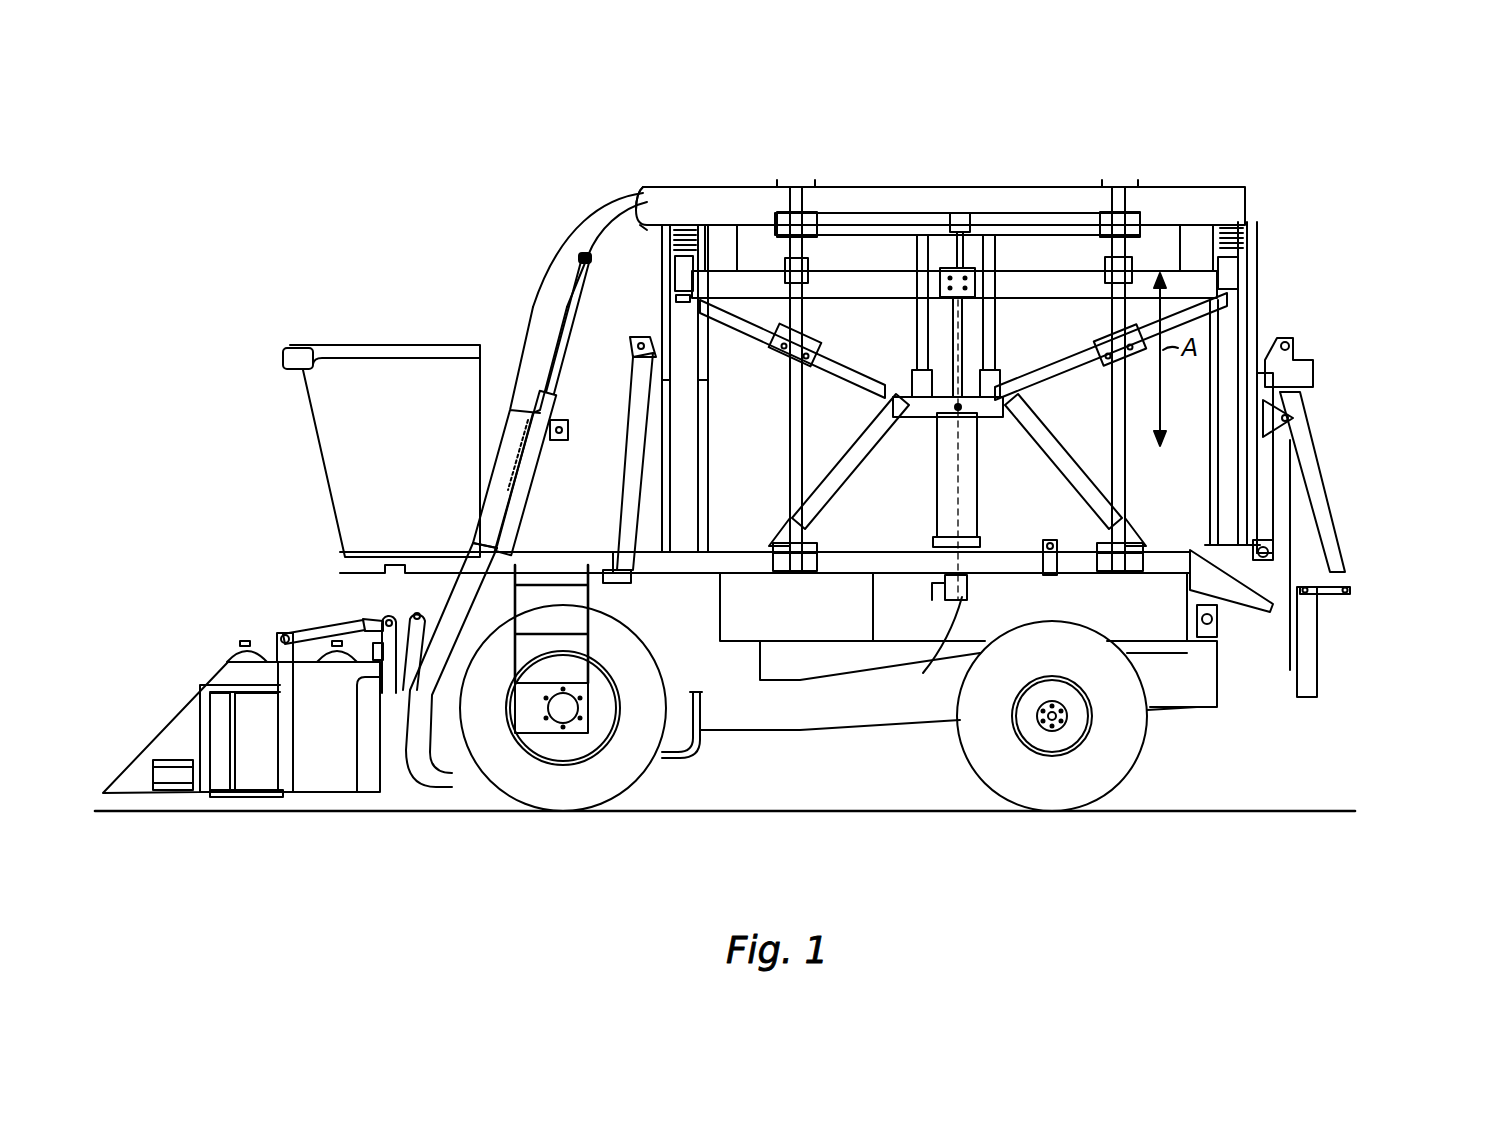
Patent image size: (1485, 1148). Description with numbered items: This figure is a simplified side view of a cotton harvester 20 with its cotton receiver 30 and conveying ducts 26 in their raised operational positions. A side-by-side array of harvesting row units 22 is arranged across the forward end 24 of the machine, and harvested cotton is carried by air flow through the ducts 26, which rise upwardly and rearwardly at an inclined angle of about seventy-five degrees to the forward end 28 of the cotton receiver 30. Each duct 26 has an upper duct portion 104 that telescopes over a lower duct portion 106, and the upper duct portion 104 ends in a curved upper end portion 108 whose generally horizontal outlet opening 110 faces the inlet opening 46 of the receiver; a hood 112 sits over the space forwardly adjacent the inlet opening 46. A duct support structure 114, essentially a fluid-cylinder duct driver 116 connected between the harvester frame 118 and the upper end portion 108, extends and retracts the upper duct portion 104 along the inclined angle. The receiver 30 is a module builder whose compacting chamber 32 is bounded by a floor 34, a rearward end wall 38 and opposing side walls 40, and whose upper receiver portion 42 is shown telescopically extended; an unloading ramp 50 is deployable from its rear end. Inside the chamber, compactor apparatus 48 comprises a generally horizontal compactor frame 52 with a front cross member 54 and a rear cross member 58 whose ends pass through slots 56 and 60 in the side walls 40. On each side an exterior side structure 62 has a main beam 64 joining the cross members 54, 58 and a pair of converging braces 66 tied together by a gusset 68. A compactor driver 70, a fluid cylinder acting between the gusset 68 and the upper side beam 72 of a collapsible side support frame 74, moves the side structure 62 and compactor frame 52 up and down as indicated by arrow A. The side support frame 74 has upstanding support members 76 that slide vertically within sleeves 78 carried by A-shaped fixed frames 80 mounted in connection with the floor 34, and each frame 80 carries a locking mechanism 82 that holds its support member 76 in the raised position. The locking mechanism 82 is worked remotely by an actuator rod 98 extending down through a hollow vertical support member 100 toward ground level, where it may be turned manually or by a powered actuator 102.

The cotton harvester 20 is at (1352, 108).
The harvesting row units 22 is at (262, 652).
The forward end 24 is at (449, 802).
The ducts 26 is at (538, 310).
The forward end 28 is at (657, 280).
The cotton receiver 30 is at (1258, 250).
The compacting chamber 32 is at (1185, 437).
The floor 34 is at (1205, 525).
The rearward end wall 38 is at (1265, 300).
The side walls 40 is at (1190, 380).
The upper receiver portion 42 is at (1125, 180).
The inlet opening 46 is at (620, 215).
The compactor apparatus 48 is at (850, 290).
The unloading ramp 50 is at (1318, 675).
The compactor frame 52 is at (600, 228).
The front cross member 54 is at (705, 230).
The slots 56 is at (662, 312).
The rear cross member 58 is at (1237, 230).
The slots 60 is at (1205, 300).
The exterior side structure 62 is at (957, 155).
The main beam 64 is at (740, 270).
The braces 66 is at (836, 345).
The gusset 68 is at (907, 415).
The compactor drivers 70 is at (965, 230).
The upper side beam 72 is at (1010, 235).
The collapsible side support frame 74 is at (838, 560).
The upstanding support members 76 is at (1010, 250).
The sleeve 78 is at (908, 385).
The A-shaped fixed frame 80 is at (845, 447).
The locking mechanism 82 is at (980, 395).
The actuator rod 98 is at (978, 513).
The hollow vertical support member 100 is at (935, 555).
The powered actuator 102 is at (928, 651).
The upper duct portion 104 is at (452, 347).
The lower duct portion 106 is at (494, 457).
The upper end portion 108 is at (660, 200).
The outlet opening 110 is at (655, 200).
The hood 112 is at (690, 187).
The duct support structure 114 is at (546, 481).
The duct driver 116 is at (548, 395).
The frame 118 is at (527, 530).